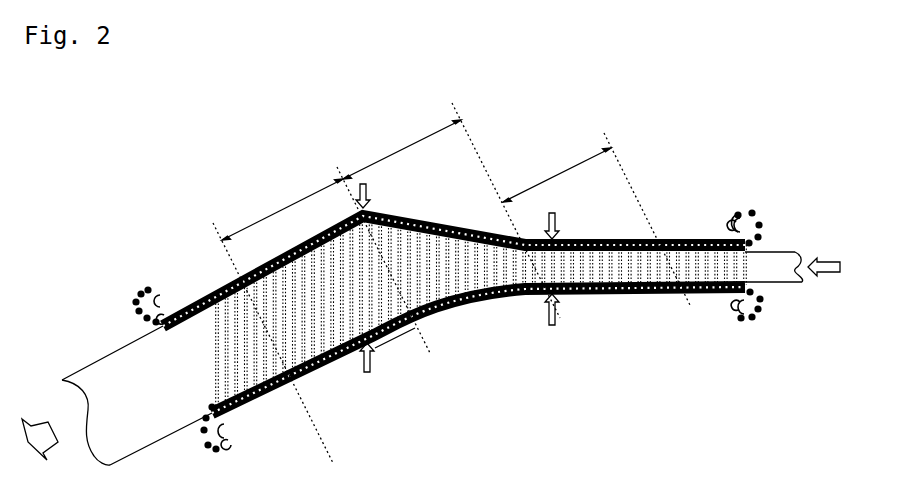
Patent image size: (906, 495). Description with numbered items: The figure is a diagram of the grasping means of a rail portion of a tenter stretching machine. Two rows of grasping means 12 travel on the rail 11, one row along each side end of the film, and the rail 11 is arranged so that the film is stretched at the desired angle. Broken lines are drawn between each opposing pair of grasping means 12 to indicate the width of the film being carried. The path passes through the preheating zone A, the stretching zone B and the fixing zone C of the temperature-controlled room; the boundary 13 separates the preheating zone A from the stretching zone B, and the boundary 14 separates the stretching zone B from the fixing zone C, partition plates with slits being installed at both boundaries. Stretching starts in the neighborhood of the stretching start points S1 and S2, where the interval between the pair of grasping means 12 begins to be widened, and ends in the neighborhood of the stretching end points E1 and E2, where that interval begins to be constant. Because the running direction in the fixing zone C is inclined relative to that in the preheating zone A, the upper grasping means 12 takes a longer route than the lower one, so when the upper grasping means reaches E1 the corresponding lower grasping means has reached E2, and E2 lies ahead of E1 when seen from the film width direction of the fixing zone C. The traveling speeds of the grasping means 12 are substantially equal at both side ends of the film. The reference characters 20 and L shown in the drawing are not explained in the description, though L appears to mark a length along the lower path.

The rail 11 is at (738, 211).
The grasping means 12 is at (767, 222).
The boundary between preheating zone and stretching zone 13 is at (480, 153).
The boundary between stretching zone and fixing zone 14 is at (430, 352).
The core tube 20 is at (748, 268).
The preheating zone A is at (557, 172).
The stretching zone B is at (402, 148).
The fixing zone C is at (282, 207).
The stretching end point E1 is at (364, 185).
The stretching end point E2 is at (361, 369).
The stretching start point S1 is at (552, 212).
The stretching start point S2 is at (552, 326).
The length L is at (395, 345).